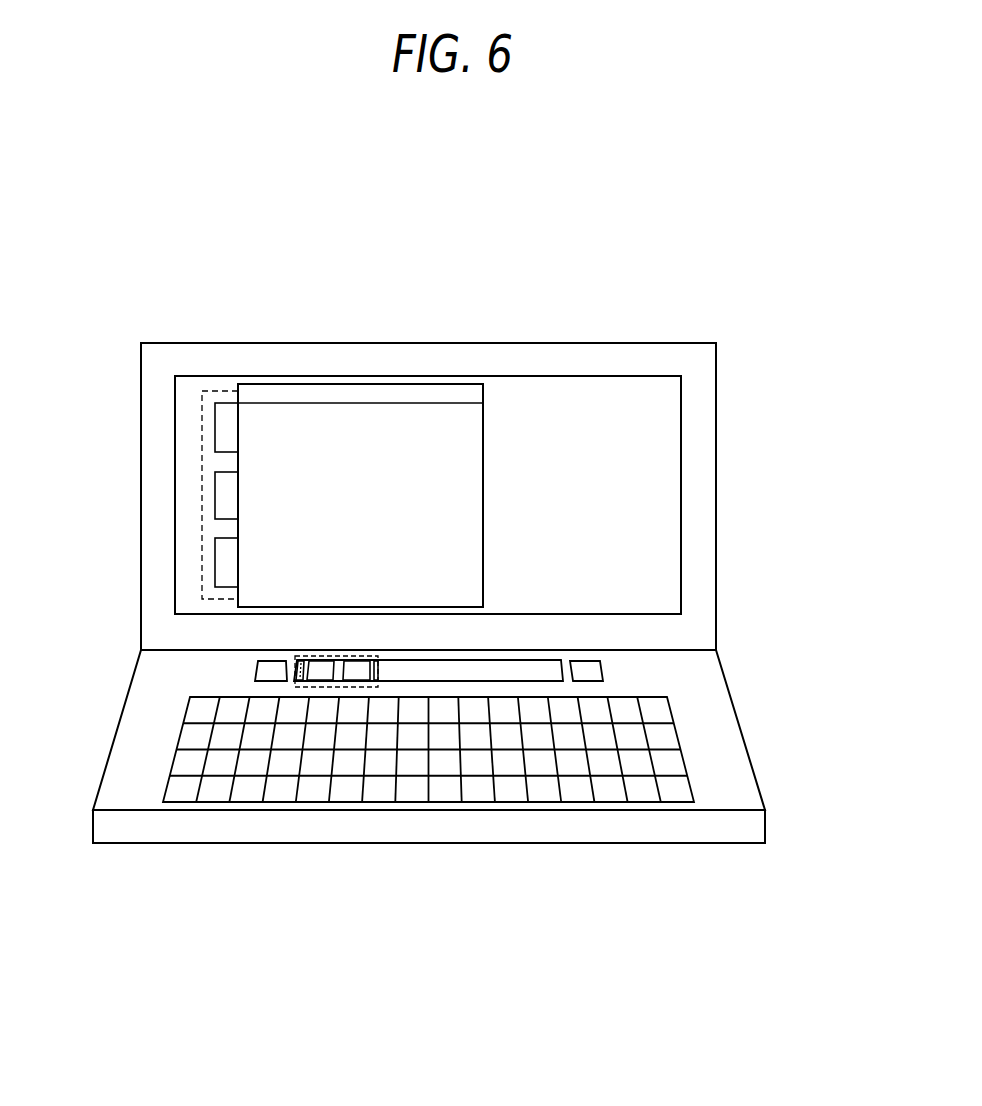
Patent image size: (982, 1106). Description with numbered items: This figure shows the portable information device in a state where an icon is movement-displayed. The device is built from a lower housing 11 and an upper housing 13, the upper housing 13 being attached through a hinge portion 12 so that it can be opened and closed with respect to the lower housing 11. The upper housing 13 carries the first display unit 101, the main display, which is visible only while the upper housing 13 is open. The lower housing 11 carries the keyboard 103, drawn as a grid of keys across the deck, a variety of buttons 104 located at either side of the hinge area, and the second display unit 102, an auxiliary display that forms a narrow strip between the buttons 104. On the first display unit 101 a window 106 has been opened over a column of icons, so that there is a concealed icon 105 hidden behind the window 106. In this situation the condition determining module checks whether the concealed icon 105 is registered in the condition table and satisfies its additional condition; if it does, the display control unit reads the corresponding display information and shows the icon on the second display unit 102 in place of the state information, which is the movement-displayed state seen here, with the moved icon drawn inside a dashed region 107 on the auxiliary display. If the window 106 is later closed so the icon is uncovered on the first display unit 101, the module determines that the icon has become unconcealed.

The lower housing 11 is at (738, 757).
The hinge portion 12 is at (716, 648).
The upper housing 13 is at (716, 474).
The first display unit 101 is at (681, 419).
The second display unit 102 is at (536, 660).
The keyboard 103 is at (178, 803).
The buttons 104 is at (256, 668).
The concealed icon 105 is at (202, 444).
The window 106 is at (450, 383).
The key display region 107 is at (327, 658).